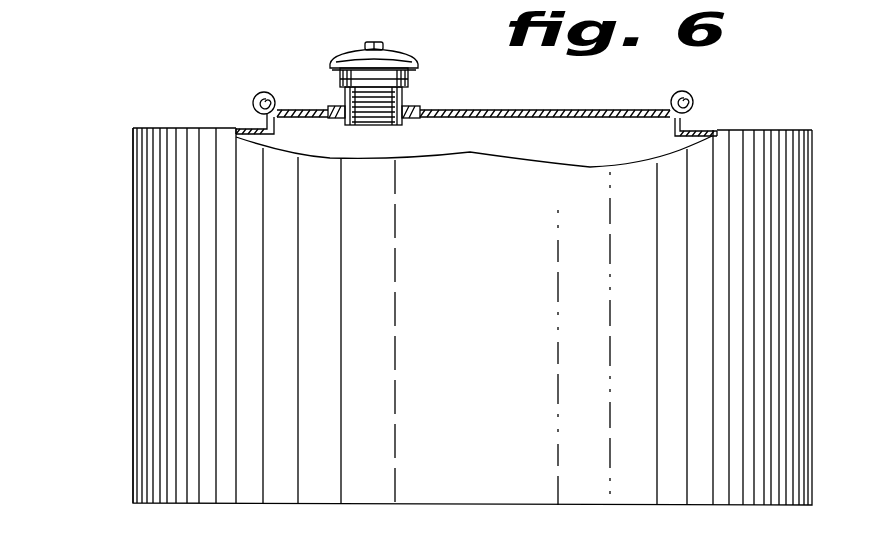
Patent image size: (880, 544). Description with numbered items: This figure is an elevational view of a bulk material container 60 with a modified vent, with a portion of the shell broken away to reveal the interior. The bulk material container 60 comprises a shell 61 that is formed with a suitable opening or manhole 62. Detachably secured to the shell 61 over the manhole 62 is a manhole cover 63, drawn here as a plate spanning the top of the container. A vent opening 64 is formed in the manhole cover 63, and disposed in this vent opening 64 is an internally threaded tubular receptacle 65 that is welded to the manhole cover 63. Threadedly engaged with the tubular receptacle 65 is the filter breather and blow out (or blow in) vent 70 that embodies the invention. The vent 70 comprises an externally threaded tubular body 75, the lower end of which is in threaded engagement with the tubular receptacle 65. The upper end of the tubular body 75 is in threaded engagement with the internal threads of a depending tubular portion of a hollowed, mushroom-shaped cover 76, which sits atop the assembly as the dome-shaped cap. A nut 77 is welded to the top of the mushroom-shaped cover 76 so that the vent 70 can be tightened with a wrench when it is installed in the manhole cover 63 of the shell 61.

The bulk material container 60 is at (124, 242).
The shell 61 is at (480, 304).
The manhole 62 is at (672, 130).
The manhole cover 63 is at (583, 109).
The vent opening 64 is at (410, 119).
The tubular receptacle 65 is at (336, 120).
The filter breather and blow out vent 70 is at (331, 56).
The tubular body 75 is at (345, 100).
The mushroom-shaped cover 76 is at (420, 57).
The nut 77 is at (377, 44).